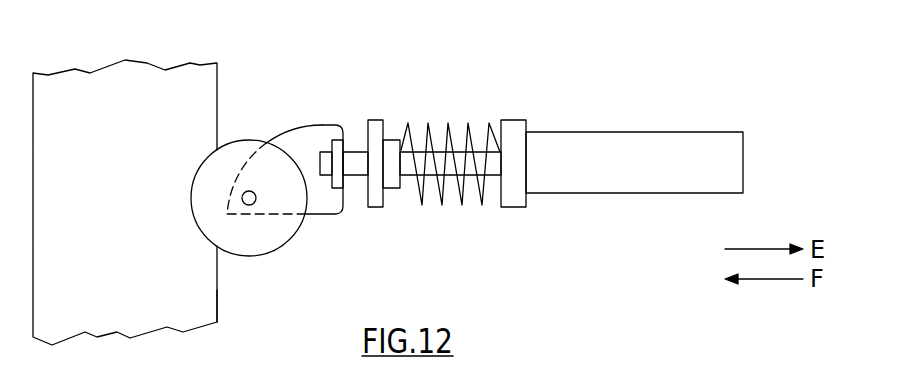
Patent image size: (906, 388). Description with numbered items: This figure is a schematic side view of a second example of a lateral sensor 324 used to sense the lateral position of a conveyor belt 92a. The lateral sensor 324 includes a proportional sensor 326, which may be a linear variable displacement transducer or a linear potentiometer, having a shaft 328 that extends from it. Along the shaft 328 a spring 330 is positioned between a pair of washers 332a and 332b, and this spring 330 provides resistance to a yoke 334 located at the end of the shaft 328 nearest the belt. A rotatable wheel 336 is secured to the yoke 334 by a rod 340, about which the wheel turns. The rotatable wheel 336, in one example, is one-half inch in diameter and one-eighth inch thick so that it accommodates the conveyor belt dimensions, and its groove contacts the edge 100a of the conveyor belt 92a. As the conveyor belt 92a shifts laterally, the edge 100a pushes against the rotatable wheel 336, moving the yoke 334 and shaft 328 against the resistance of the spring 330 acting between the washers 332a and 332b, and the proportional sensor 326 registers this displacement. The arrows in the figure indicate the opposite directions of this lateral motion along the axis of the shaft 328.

The conveyor belt 92a is at (217, 84).
The edge of the conveyor belt 100a is at (220, 295).
The lateral sensor 324 is at (474, 164).
The proportional sensor 326 is at (700, 147).
The shaft 328 is at (455, 140).
The spring 330 is at (428, 148).
The washer 332a is at (374, 120).
The washer 332b is at (515, 120).
The yoke 334 is at (297, 126).
The rotatable wheel 336 is at (262, 257).
The rod 340 is at (255, 199).